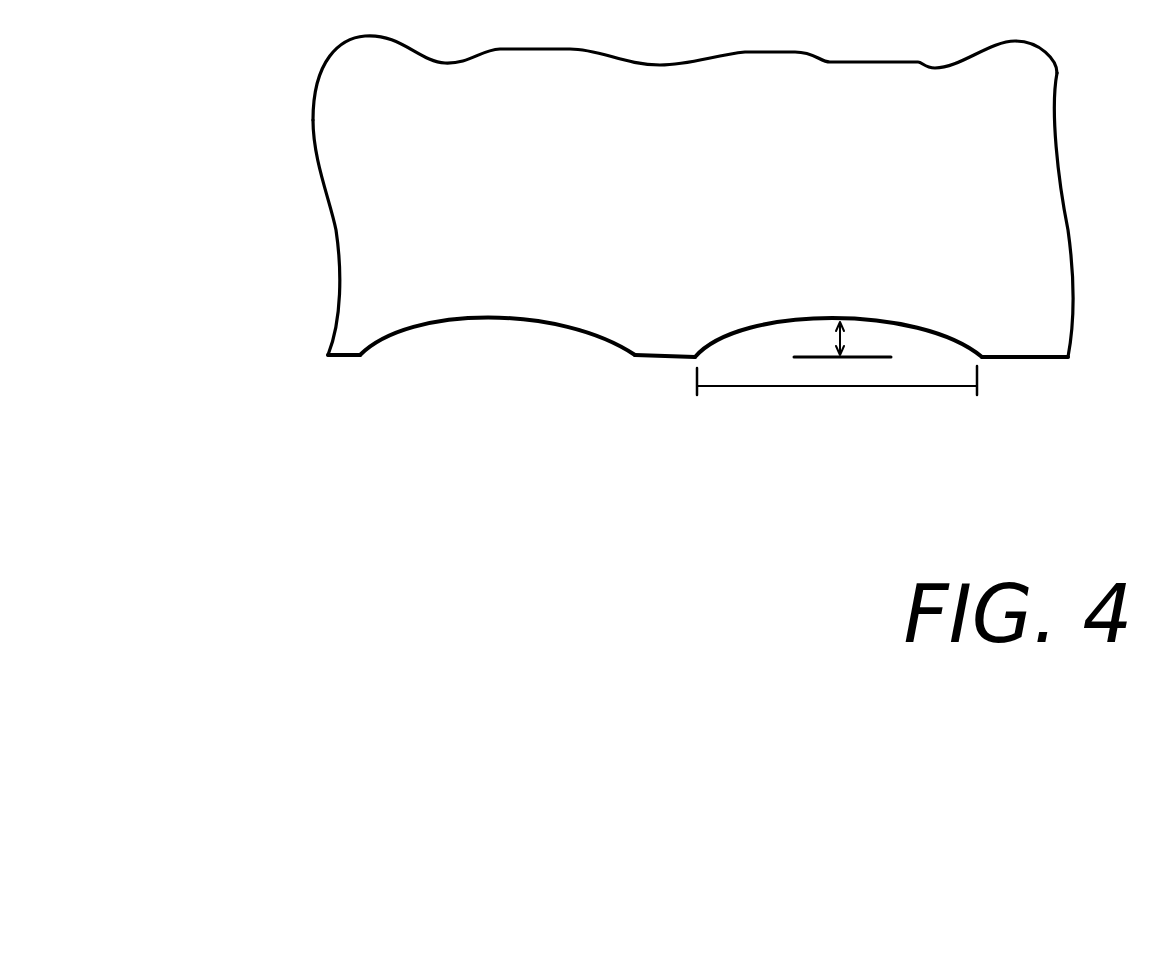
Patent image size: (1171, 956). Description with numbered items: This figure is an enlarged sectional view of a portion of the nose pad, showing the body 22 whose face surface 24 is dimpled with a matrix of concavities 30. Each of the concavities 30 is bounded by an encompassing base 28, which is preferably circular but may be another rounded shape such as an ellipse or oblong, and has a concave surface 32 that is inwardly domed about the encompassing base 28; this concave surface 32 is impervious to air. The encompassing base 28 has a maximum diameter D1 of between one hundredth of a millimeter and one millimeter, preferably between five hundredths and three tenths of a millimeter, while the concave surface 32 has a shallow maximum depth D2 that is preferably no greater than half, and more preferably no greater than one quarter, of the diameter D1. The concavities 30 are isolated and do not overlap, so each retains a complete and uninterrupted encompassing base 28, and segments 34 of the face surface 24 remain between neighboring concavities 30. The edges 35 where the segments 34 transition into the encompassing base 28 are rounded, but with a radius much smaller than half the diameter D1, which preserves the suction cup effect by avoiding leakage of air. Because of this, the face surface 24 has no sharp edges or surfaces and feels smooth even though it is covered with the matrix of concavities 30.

The body 22 is at (343, 125).
The face surface 24 is at (343, 358).
The encompassing base 28 is at (360, 357).
The concavities 30 is at (730, 350).
The concave surface 32 is at (482, 322).
The segments 34 is at (672, 353).
The edges 35 is at (985, 360).
The maximum diameter D1 is at (838, 387).
The maximum depth D2 is at (838, 338).